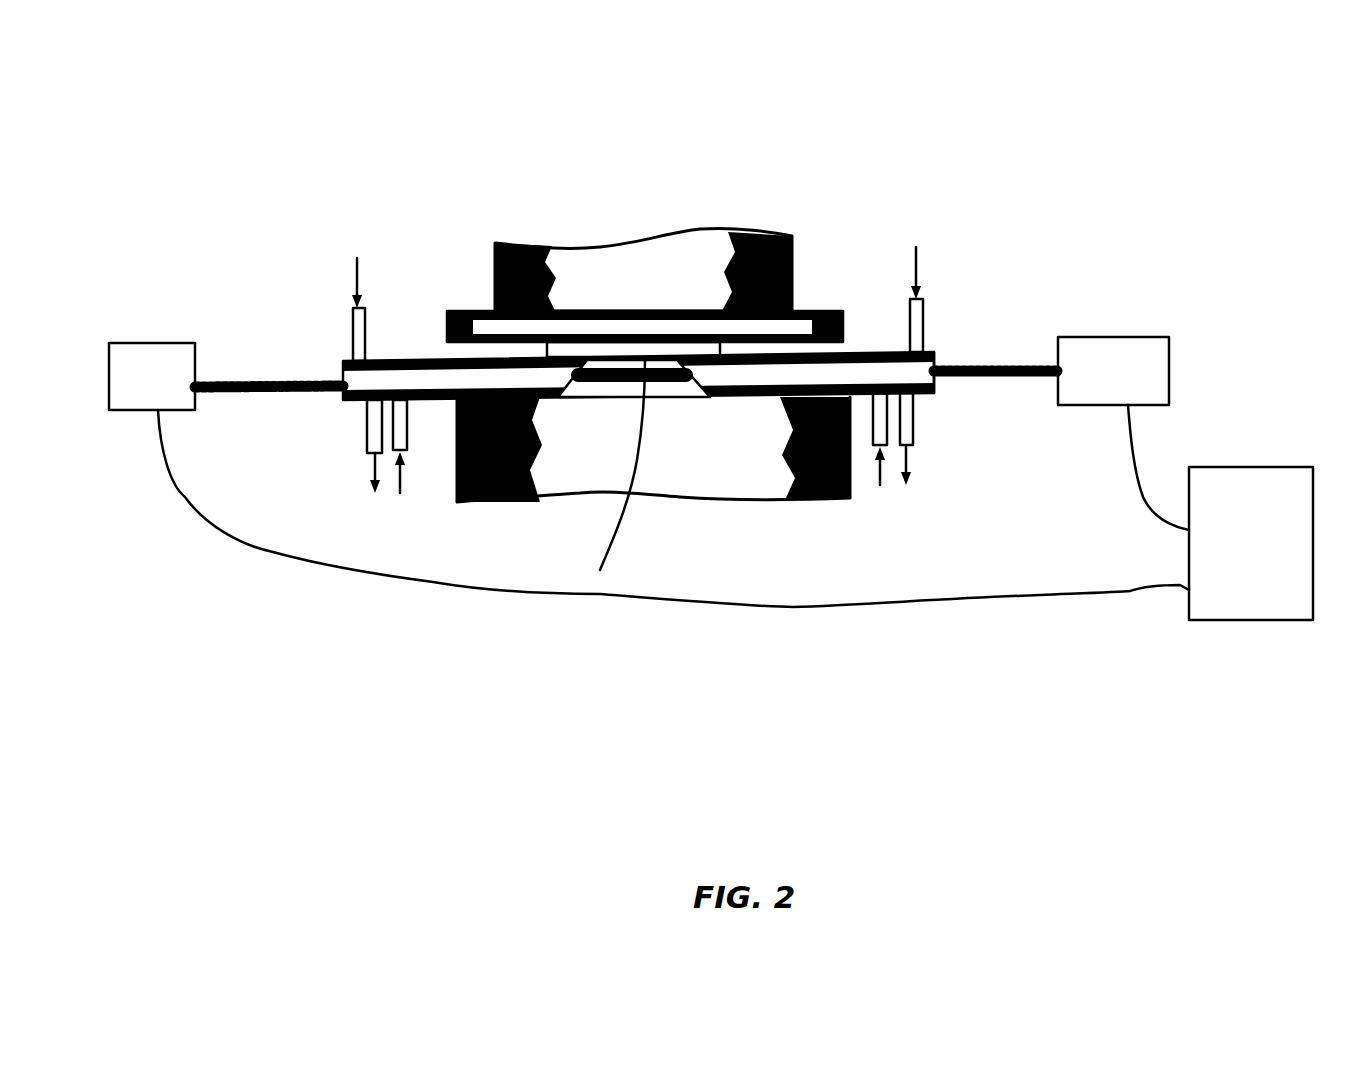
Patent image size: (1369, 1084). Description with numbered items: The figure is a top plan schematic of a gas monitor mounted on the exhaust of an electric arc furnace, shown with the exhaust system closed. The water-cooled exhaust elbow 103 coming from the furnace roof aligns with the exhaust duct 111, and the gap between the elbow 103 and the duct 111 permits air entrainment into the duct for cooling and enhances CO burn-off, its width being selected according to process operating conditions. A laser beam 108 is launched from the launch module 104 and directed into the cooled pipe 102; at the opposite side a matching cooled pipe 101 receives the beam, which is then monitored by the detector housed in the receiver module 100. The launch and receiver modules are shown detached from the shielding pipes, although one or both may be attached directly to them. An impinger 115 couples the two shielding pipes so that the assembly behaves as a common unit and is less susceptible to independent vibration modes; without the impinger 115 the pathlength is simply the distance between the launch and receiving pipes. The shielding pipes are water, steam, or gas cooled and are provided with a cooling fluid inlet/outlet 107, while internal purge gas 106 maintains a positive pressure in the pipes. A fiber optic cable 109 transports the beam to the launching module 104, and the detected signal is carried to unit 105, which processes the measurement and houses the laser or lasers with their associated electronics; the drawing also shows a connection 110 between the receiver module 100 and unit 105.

The receiver module 100 is at (1135, 337).
The cooled pipe 101 is at (937, 357).
The cooled pipe 102 is at (375, 360).
The exhaust elbow 103 is at (665, 230).
The launch module 104 is at (126, 343).
The processing unit 105 is at (1250, 465).
The internal purge gas 106 is at (357, 250).
The cooling fluid inlet/outlet 107 is at (390, 492).
The laser beam 108 is at (983, 380).
The fiber optic cable 109 is at (908, 598).
The control line 110 is at (1137, 443).
The exhaust duct 111 is at (703, 515).
The impinger 115 is at (600, 570).